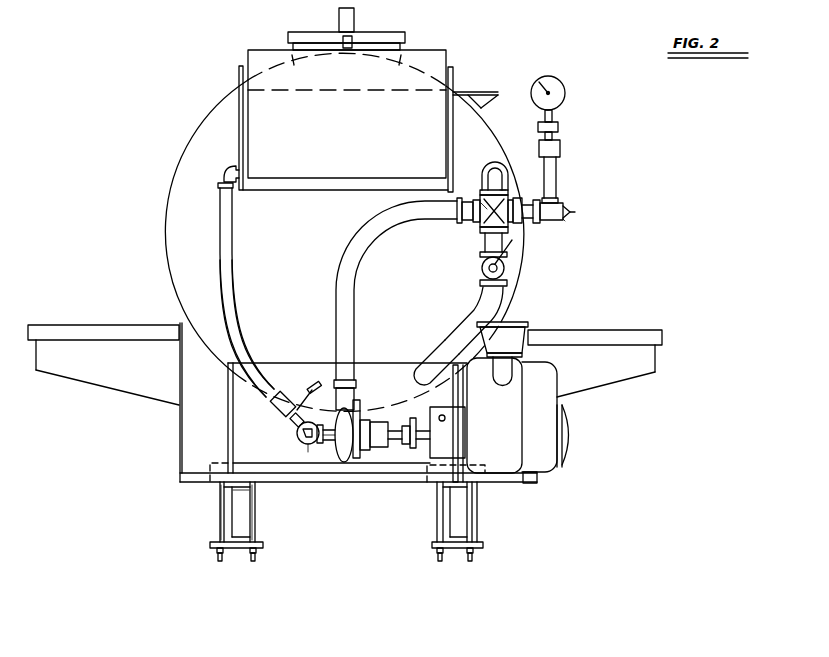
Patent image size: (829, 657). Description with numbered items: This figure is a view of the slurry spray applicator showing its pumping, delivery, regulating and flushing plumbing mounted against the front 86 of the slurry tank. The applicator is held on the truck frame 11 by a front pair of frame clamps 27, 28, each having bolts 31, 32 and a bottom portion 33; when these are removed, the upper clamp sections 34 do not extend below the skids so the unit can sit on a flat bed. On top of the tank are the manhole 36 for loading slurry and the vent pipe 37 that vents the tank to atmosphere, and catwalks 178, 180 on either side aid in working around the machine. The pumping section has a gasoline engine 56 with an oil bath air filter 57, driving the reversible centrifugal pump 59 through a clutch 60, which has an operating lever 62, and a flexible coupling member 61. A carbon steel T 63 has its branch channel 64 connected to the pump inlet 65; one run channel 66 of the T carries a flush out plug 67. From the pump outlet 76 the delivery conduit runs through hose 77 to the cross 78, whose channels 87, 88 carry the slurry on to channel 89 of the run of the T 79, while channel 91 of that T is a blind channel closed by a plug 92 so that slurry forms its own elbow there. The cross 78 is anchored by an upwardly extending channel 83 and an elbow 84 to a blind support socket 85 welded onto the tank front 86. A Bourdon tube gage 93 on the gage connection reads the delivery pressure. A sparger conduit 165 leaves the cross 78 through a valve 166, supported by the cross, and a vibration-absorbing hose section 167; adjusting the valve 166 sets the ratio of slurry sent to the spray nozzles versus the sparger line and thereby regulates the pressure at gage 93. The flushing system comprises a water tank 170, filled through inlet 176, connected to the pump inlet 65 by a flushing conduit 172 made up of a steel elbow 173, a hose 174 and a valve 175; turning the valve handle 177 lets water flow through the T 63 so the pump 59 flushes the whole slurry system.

The truck frame 11 is at (236, 530).
The front frame clamp 27 is at (218, 535).
The front frame clamp 28 is at (481, 528).
The bolt 31 is at (220, 503).
The bolt 32 is at (258, 527).
The bottom portion of the clamps 33 is at (228, 548).
The upper clamp sections 34 is at (215, 460).
The manhole 36 is at (293, 45).
The vent pipe 37 is at (355, 23).
The gasoline engine 56 is at (511, 420).
The oil bath air filter 57 is at (527, 348).
The reversible centrifugal pump 59 is at (356, 414).
The clutch 60 is at (447, 432).
The flexible coupling member 61 is at (407, 446).
The operating lever 62 is at (445, 418).
The T 63 is at (305, 453).
The branch channel 64 is at (320, 445).
The pump inlet 65 is at (334, 452).
The run channel 66 is at (297, 432).
The flush out plug 67 is at (296, 437).
The pump outlet 76 is at (357, 391).
The hose 77 is at (356, 240).
The cross 78 is at (478, 227).
The T 79 is at (572, 221).
The upwardly extending channel 83 is at (510, 205).
The elbow 84 is at (503, 188).
The blind support socket 85 is at (492, 165).
The front of the slurry tank 86 is at (344, 232).
The channel of the cross 87 is at (484, 205).
The channel of the cross 88 is at (512, 222).
The run channel of the T 89 is at (560, 207).
The blind channel 91 is at (562, 219).
The plug 92 is at (572, 212).
The Bourdon tube gage 93 is at (563, 128).
The sparger conduit 165 is at (470, 304).
The valve 166 is at (487, 268).
The hose section 167 is at (458, 344).
The water tank 170 is at (347, 114).
The flushing conduit 172 is at (216, 262).
The steel elbow 173 is at (222, 170).
The hose 174 is at (219, 222).
The valve 175 is at (297, 399).
The inlet 176 is at (450, 61).
The valve handle 177 is at (305, 382).
The catwalk 178 is at (85, 325).
The catwalk 180 is at (615, 330).